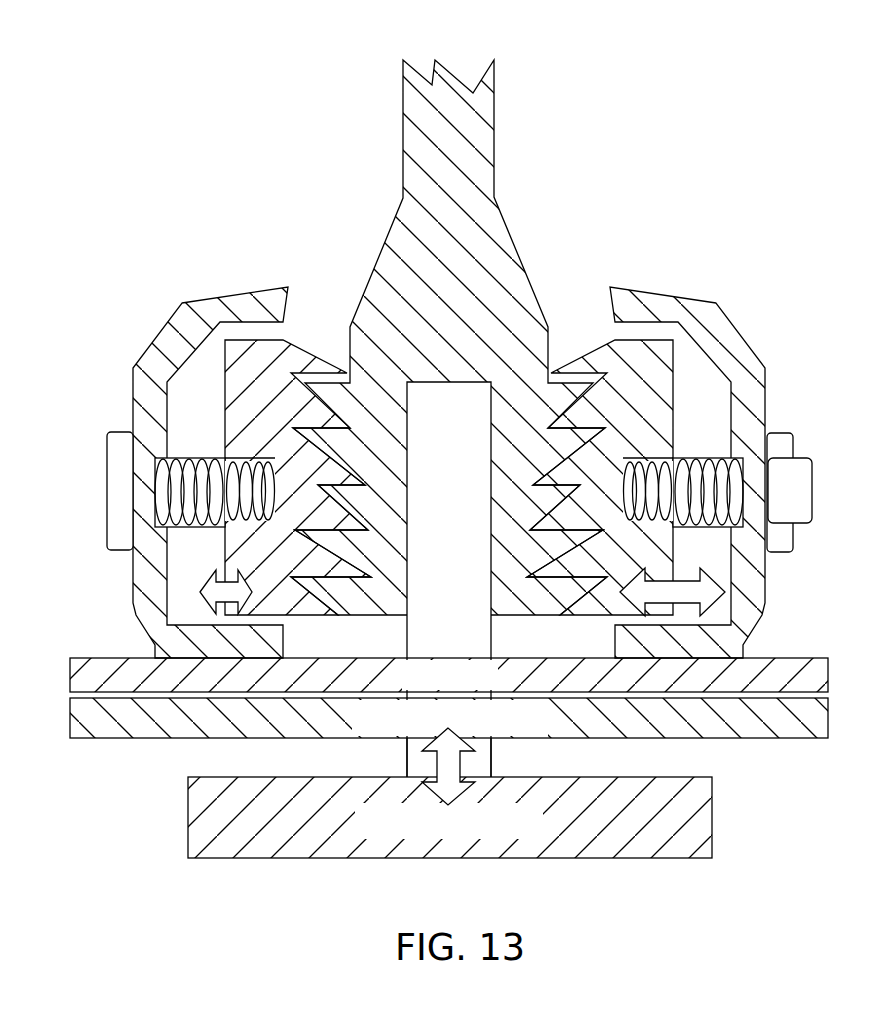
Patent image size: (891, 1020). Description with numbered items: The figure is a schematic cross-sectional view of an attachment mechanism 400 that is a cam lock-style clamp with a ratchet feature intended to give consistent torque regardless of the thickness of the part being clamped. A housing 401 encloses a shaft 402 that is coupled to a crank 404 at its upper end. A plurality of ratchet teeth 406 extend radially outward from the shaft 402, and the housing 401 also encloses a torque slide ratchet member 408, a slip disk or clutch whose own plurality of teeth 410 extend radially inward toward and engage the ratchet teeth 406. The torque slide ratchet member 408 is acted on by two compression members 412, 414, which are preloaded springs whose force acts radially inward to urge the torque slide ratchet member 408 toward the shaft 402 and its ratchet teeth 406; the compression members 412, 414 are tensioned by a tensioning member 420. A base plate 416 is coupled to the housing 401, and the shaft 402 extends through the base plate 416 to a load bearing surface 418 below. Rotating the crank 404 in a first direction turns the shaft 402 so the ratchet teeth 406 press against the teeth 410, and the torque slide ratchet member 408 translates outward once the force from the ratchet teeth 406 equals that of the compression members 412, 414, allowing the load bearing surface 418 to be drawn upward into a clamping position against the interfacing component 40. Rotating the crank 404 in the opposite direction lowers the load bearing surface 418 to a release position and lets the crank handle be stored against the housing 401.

The attachment mechanism 400 is at (745, 228).
The housing 401 is at (191, 331).
The shaft 402 is at (442, 398).
The crank 404 is at (420, 140).
The ratchet teeth 406 is at (253, 565).
The torque slide ratchet member 408 is at (260, 393).
The teeth 410 is at (600, 430).
The compression member 412 is at (157, 486).
The compression member 414 is at (783, 530).
The base plate 416 is at (815, 668).
The load bearing surface 418 is at (695, 818).
The interfacing component 40 is at (815, 715).
The tensioning member 420 is at (800, 489).